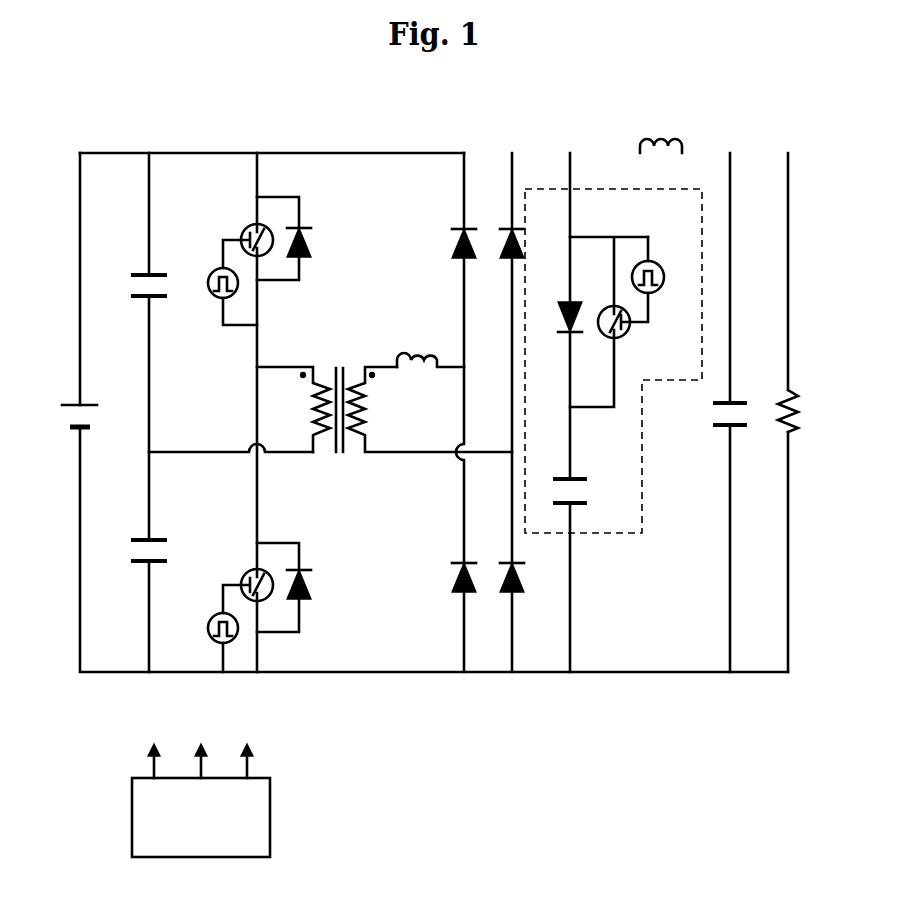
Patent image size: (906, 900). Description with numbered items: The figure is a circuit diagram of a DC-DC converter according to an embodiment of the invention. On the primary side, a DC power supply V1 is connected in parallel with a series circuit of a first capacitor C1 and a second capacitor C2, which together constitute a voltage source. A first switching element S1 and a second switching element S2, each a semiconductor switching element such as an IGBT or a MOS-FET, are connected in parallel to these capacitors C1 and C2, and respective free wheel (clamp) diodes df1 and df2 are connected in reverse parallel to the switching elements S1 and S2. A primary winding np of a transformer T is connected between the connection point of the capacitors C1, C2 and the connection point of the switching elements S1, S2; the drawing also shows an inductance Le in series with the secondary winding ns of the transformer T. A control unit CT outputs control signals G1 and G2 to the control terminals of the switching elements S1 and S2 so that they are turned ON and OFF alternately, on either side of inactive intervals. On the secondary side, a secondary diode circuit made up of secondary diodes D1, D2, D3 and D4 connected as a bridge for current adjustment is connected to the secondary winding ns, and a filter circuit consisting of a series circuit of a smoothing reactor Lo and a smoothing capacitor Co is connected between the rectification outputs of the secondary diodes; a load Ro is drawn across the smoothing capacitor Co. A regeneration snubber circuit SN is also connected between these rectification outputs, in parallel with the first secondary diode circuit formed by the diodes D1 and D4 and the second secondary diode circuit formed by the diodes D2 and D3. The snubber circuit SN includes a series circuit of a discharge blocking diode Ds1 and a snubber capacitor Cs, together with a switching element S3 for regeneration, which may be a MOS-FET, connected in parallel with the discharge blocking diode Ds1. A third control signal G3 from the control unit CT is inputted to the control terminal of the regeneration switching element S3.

The DC power supply V1 is at (67, 416).
The first capacitor C1 is at (133, 285).
The second capacitor C2 is at (133, 550).
The first switching element S1 is at (248, 226).
The second switching element S2 is at (248, 570).
The free wheel diode df1 is at (298, 238).
The free wheel diode df2 is at (298, 587).
The control signal G1 is at (221, 282).
The control signal G2 is at (212, 628).
The control signal G3 is at (660, 279).
The transformer T is at (340, 398).
The primary winding np is at (293, 409).
The secondary winding ns is at (430, 409).
The leakage inductance Le is at (430, 342).
The secondary diode D1 is at (452, 243).
The secondary diode D2 is at (452, 577).
The secondary diode D3 is at (524, 243).
The secondary diode D4 is at (524, 577).
The discharge blocking diode Ds1 is at (559, 332).
The snubber capacitor Cs is at (575, 477).
The switching element for regeneration S3 is at (609, 322).
The regeneration snubber circuit SN is at (613, 379).
The smoothing reactor Lo is at (661, 129).
The smoothing capacitor Co is at (714, 415).
The load resistor Ro is at (801, 411).
The control unit CT is at (201, 810).